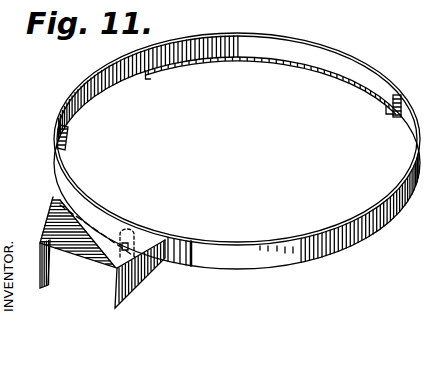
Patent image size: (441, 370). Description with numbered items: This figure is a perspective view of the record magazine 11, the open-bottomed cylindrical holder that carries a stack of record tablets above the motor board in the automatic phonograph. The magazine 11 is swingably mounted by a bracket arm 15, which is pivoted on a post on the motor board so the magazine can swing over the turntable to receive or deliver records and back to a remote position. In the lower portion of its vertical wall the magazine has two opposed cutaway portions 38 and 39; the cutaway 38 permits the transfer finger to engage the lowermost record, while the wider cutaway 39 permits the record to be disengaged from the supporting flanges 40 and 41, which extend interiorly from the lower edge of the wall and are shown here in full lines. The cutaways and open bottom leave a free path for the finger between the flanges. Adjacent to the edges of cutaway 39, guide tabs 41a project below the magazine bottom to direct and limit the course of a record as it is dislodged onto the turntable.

The magazine 11 is at (370, 221).
The bracket arm 15 is at (55, 210).
The cutaway portion 38 is at (110, 95).
The cutaway portion 39 is at (410, 159).
The supporting flange 40 is at (283, 67).
The supporting flange 41 is at (67, 145).
The guide tab 41a is at (397, 95).